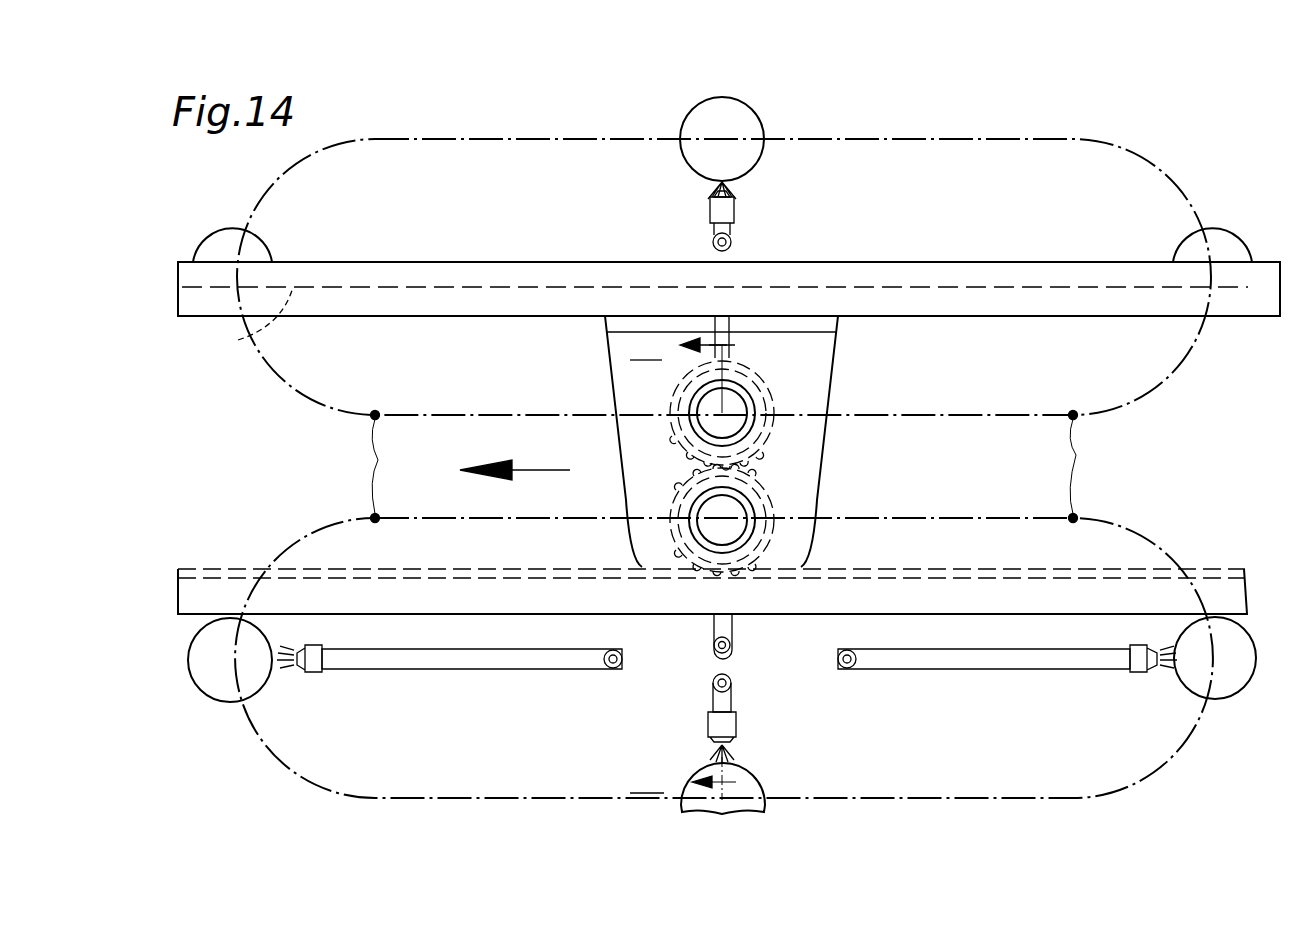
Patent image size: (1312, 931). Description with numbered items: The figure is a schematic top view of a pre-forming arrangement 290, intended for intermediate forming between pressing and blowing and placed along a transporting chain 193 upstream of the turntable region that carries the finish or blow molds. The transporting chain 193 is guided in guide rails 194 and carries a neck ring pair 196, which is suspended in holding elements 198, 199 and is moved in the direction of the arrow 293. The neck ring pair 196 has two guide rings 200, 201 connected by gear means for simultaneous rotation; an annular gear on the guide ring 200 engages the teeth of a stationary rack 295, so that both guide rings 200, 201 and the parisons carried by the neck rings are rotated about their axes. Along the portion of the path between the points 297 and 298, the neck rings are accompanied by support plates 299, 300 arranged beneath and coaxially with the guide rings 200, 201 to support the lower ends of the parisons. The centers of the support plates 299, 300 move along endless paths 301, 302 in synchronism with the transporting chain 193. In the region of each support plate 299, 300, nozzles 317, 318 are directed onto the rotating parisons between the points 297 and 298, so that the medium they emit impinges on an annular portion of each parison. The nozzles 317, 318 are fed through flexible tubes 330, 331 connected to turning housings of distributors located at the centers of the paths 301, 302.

The pre-forming arrangement 290 is at (1160, 138).
The support plate 300 is at (738, 106).
The nozzle 318 is at (735, 209).
The flexible tube 331 is at (731, 235).
The transporting chain 193 is at (230, 317).
The guide rails 194 is at (415, 318).
The neck ring pair 196 is at (741, 441).
The endless path 302 is at (276, 388).
The endless path 301 is at (284, 769).
The point 298 is at (398, 466).
The point 297 is at (1098, 466).
The arrow 293 is at (560, 470).
The holding element 198 is at (618, 485).
The holding element 199 is at (820, 500).
The guide ring 201 is at (772, 442).
The guide ring 200 is at (774, 557).
The stationary rack 295 is at (1242, 590).
The flexible tube 330 is at (490, 672).
The nozzle 317 is at (318, 675).
The support plate 299 is at (190, 668).